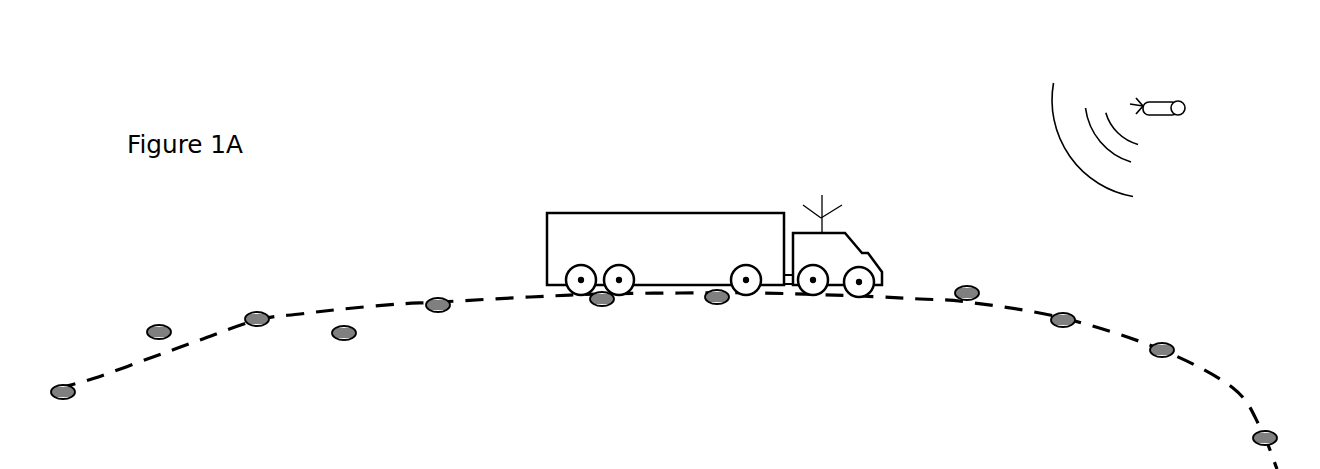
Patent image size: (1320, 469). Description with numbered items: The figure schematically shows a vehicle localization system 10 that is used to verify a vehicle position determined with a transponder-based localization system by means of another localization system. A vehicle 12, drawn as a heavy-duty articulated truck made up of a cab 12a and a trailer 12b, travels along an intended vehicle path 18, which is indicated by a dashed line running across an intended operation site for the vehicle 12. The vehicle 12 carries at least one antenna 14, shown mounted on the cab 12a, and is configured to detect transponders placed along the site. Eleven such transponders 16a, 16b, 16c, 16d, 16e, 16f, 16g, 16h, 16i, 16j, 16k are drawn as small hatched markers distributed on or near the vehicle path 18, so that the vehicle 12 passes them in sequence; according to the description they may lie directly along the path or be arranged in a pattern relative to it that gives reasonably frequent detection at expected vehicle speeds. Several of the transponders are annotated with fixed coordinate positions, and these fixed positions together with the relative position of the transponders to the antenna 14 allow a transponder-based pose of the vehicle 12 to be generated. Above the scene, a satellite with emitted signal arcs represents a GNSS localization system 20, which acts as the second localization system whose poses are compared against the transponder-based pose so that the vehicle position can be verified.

The vehicle localization system 10 is at (452, 152).
The vehicle 12 is at (519, 178).
The cab 12a is at (842, 266).
The trailer 12b is at (680, 261).
The antenna 14 is at (831, 207).
The transponder 16a is at (61, 400).
The transponder 16b is at (153, 325).
The transponder 16c is at (253, 312).
The transponder 16d is at (340, 341).
The transponder 16e is at (437, 313).
The transponder 16f is at (597, 307).
The transponder 16g is at (715, 305).
The transponder 16h is at (962, 285).
The transponder 16i is at (1058, 329).
The transponder 16j is at (1157, 358).
The transponder 16k is at (1273, 432).
The vehicle path 18 is at (95, 377).
The GNSS localization system 20 is at (1165, 84).